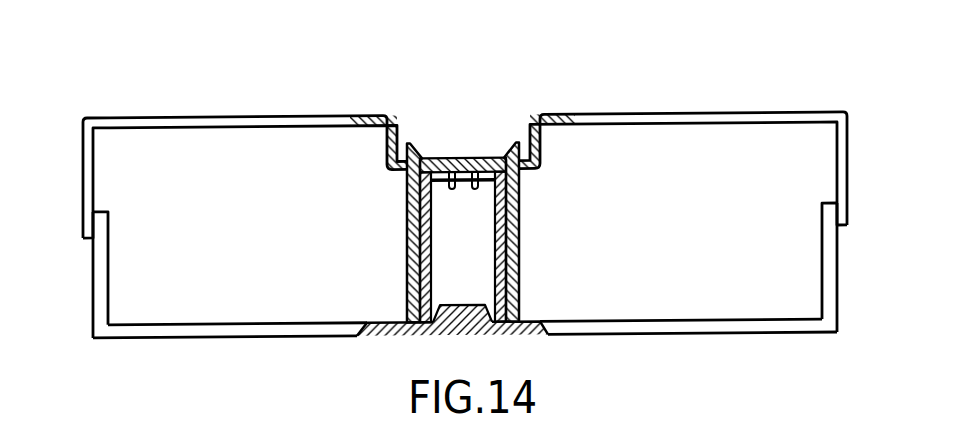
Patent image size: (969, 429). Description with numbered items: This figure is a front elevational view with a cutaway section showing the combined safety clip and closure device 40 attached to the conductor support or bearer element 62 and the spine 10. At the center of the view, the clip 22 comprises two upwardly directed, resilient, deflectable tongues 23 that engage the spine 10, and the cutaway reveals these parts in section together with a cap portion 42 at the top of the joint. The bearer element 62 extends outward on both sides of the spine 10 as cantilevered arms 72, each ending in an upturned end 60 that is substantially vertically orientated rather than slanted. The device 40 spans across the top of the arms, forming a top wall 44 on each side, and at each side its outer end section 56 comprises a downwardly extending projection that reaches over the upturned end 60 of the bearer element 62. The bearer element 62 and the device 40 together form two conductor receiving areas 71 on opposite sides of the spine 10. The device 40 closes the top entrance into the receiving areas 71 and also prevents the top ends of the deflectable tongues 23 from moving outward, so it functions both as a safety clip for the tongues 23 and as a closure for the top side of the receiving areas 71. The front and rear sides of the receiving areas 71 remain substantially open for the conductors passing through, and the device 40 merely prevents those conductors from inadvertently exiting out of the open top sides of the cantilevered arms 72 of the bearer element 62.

The combined safety clip and closure device 40 is at (217, 68).
The panel top wall 44 is at (270, 114).
The outer end section 56 is at (82, 143).
The upturned end 60 is at (108, 242).
The bearer element 62 is at (281, 336).
The cantilevered arm 72 is at (175, 338).
The conductor receiving area 71 is at (292, 266).
The cap 42 is at (457, 158).
The resilient tongue 23 is at (407, 210).
The clip 22 is at (520, 263).
The spine 10 is at (432, 285).